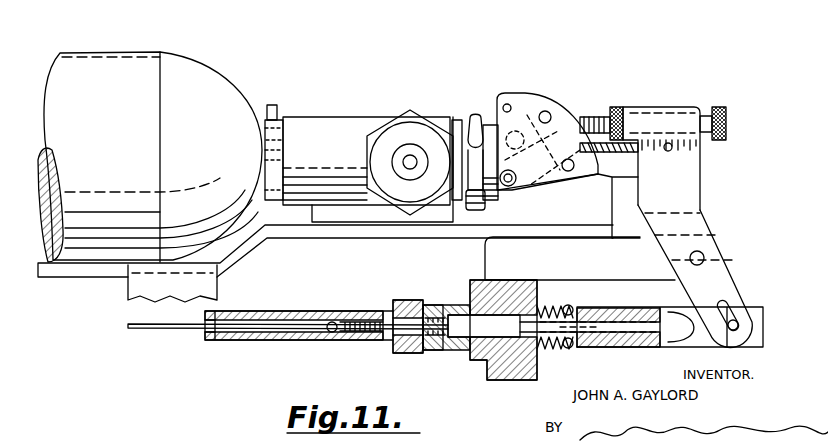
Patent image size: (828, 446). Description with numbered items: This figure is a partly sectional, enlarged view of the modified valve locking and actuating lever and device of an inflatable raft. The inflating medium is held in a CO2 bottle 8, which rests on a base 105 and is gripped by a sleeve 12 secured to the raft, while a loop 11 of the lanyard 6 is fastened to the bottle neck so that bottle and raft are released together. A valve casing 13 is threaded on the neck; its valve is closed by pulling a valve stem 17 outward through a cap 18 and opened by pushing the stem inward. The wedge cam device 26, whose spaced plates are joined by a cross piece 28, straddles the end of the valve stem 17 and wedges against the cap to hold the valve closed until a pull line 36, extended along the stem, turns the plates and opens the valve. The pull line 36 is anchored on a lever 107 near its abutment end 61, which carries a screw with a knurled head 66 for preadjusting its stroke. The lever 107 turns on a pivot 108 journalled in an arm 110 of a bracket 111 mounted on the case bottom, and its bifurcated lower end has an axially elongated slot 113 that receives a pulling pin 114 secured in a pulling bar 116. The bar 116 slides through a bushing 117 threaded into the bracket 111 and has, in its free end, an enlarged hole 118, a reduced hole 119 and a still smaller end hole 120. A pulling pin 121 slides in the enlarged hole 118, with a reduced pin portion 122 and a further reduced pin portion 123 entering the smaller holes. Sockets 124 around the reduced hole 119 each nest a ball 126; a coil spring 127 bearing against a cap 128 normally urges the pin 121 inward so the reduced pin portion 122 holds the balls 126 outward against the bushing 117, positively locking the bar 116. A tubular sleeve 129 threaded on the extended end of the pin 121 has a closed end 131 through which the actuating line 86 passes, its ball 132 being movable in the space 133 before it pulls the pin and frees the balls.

The lanyard 6 is at (280, 109).
The CO2 bottle 8 is at (210, 83).
The loop 11 is at (265, 143).
The sleeve 12 is at (162, 63).
The valve casing 13 is at (327, 127).
The valve stem 17 is at (547, 186).
The cap 18 is at (480, 118).
The wedge cam device 26 is at (538, 86).
The cross piece 28 is at (596, 170).
The pull line 36 is at (606, 146).
The abutment end 61 is at (655, 107).
The knurled head 66 is at (728, 118).
The actuating line 86 is at (142, 329).
The base 105 is at (288, 235).
The lever 107 is at (718, 271).
The pivot 108 is at (700, 258).
The arm 110 is at (580, 258).
The bracket 111 is at (499, 380).
The axially elongated slot 113 is at (728, 308).
The pulling pin 114 is at (738, 326).
The pulling bar 116 is at (652, 340).
The bushing 117 is at (458, 350).
The enlarged hole 118 is at (428, 350).
The reduced hole 119 is at (540, 305).
The end hole 120 is at (616, 312).
The pulling pin 121 is at (512, 326).
The reduced pin portion 122 is at (565, 350).
The further reduced pin portion 123 is at (613, 340).
The sockets 124 is at (588, 318).
The ball 126 is at (570, 305).
The coil spring 127 is at (438, 312).
The cap 128 is at (400, 305).
The tubular sleeve 129 is at (258, 312).
The closed end 131 is at (205, 336).
The ball 132 is at (330, 333).
The space 133 is at (260, 336).